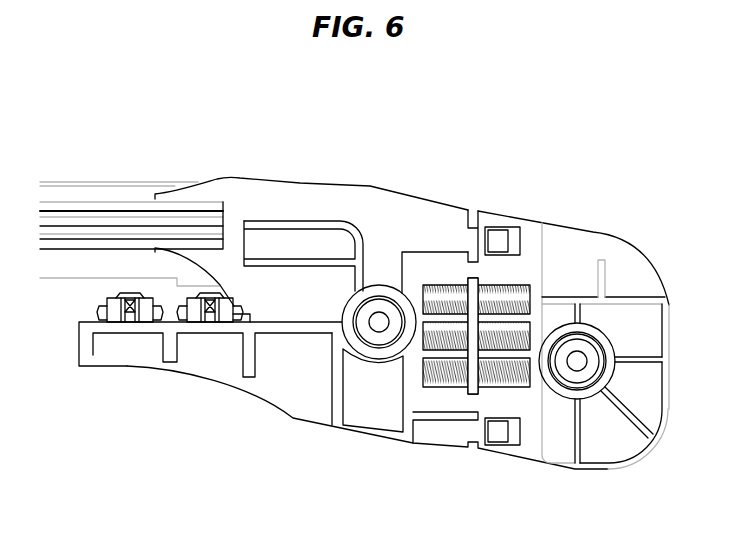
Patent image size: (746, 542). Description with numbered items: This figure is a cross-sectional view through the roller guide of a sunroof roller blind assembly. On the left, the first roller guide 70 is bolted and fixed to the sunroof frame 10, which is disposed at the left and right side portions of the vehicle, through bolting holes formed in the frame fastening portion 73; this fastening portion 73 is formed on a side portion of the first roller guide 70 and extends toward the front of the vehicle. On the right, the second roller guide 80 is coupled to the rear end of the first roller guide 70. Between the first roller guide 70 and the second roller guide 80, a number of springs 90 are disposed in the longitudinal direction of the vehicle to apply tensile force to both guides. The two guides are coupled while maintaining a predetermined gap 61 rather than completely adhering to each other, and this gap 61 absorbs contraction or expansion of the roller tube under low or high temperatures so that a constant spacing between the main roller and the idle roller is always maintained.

The sunroof frame 10 is at (115, 205).
The first roller guide 70 is at (294, 197).
The frame fastening portion 73 is at (132, 328).
The gap 61 is at (476, 210).
The spring 90 is at (458, 368).
The second roller guide 80 is at (570, 247).